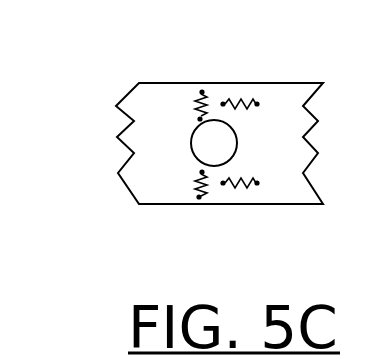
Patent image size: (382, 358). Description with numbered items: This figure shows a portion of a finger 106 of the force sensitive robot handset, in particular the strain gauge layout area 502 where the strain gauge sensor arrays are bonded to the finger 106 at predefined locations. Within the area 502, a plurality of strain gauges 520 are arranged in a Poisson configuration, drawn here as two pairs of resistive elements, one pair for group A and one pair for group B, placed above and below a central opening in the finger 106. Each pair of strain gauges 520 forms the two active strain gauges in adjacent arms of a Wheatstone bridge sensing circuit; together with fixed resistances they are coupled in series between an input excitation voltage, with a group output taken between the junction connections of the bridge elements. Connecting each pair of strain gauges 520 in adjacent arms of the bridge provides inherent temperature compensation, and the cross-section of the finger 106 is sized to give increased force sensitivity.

The strain gauge layout area 502 is at (185, 148).
The finger 106 is at (161, 145).
The strain gauge 520 is at (228, 95).